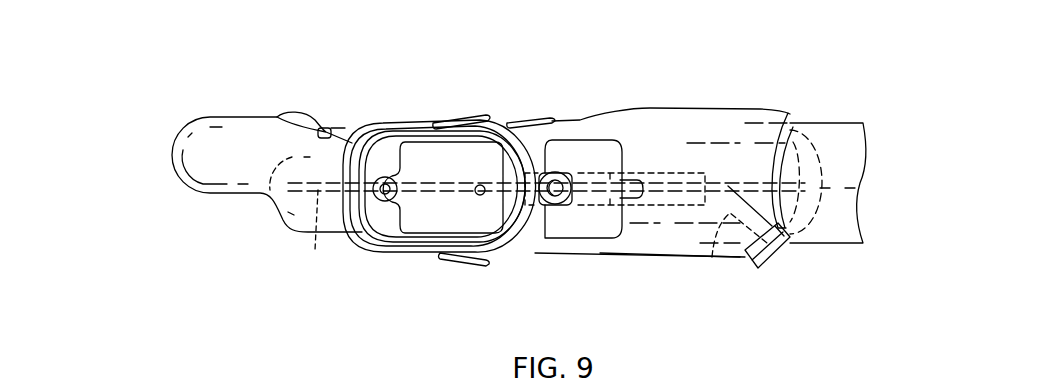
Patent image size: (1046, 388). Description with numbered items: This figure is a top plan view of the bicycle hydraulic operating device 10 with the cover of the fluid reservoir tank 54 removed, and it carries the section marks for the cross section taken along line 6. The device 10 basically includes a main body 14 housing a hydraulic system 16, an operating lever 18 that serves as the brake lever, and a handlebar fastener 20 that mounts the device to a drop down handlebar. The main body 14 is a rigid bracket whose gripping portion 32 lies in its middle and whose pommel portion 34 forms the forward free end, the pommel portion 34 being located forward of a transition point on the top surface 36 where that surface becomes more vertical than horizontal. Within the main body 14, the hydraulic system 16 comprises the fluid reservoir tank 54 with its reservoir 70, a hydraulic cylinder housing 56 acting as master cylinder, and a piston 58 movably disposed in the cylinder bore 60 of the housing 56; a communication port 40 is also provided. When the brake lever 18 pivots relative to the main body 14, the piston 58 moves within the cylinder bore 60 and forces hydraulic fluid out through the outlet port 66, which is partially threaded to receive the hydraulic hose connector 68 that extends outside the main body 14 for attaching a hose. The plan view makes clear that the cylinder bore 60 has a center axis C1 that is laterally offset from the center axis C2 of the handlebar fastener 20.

The section line 6- 6 is at (146, 188).
The bicycle hydraulic operating device 10 is at (575, 46).
The main body 14 is at (695, 107).
The hydraulic system 16 is at (512, 100).
The operating lever 18 is at (221, 115).
The handlebar fastener 20 is at (819, 141).
The gripping portion 32 is at (668, 263).
The pommel portion 34 is at (495, 262).
The top surface 36 is at (528, 238).
The communication port 40 is at (561, 168).
The fluid reservoir tank 54 is at (420, 88).
The hydraulic cylinder housing 56 is at (602, 126).
The piston 58 is at (597, 205).
The cylinder bore 60 is at (650, 172).
The outlet port 66 is at (712, 258).
The hydraulic hose connector 68 is at (780, 259).
The reservoir 70 is at (441, 262).
The center axis of the cylinder bore C1 is at (315, 228).
The center axis of the handlebar fastener C2 is at (299, 185).